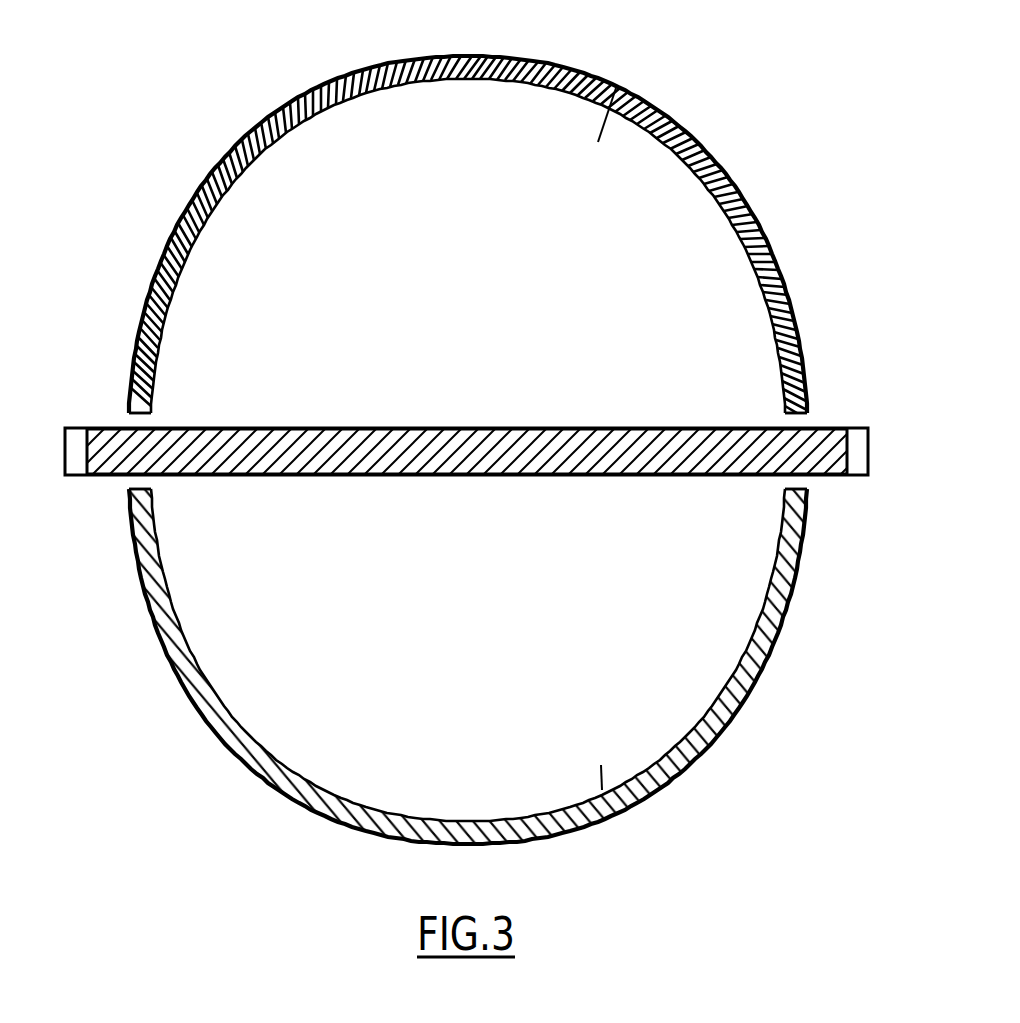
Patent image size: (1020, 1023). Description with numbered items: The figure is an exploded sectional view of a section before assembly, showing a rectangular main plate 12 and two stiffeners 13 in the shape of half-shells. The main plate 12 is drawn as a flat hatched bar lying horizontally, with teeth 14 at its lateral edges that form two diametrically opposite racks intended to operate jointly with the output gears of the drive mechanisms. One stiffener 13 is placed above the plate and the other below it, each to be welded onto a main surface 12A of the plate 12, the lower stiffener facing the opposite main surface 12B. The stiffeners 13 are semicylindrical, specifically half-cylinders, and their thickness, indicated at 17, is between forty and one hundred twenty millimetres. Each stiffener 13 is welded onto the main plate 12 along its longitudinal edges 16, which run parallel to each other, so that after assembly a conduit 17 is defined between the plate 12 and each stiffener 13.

The rectangular main plate 12 is at (461, 481).
The main surface 12A is at (103, 428).
The lower face of plate 12B is at (94, 477).
The stiffener 13 is at (693, 153).
The teeth 14 is at (65, 458).
The longitudinal edges 16 is at (131, 414).
The conduit 17 is at (607, 118).